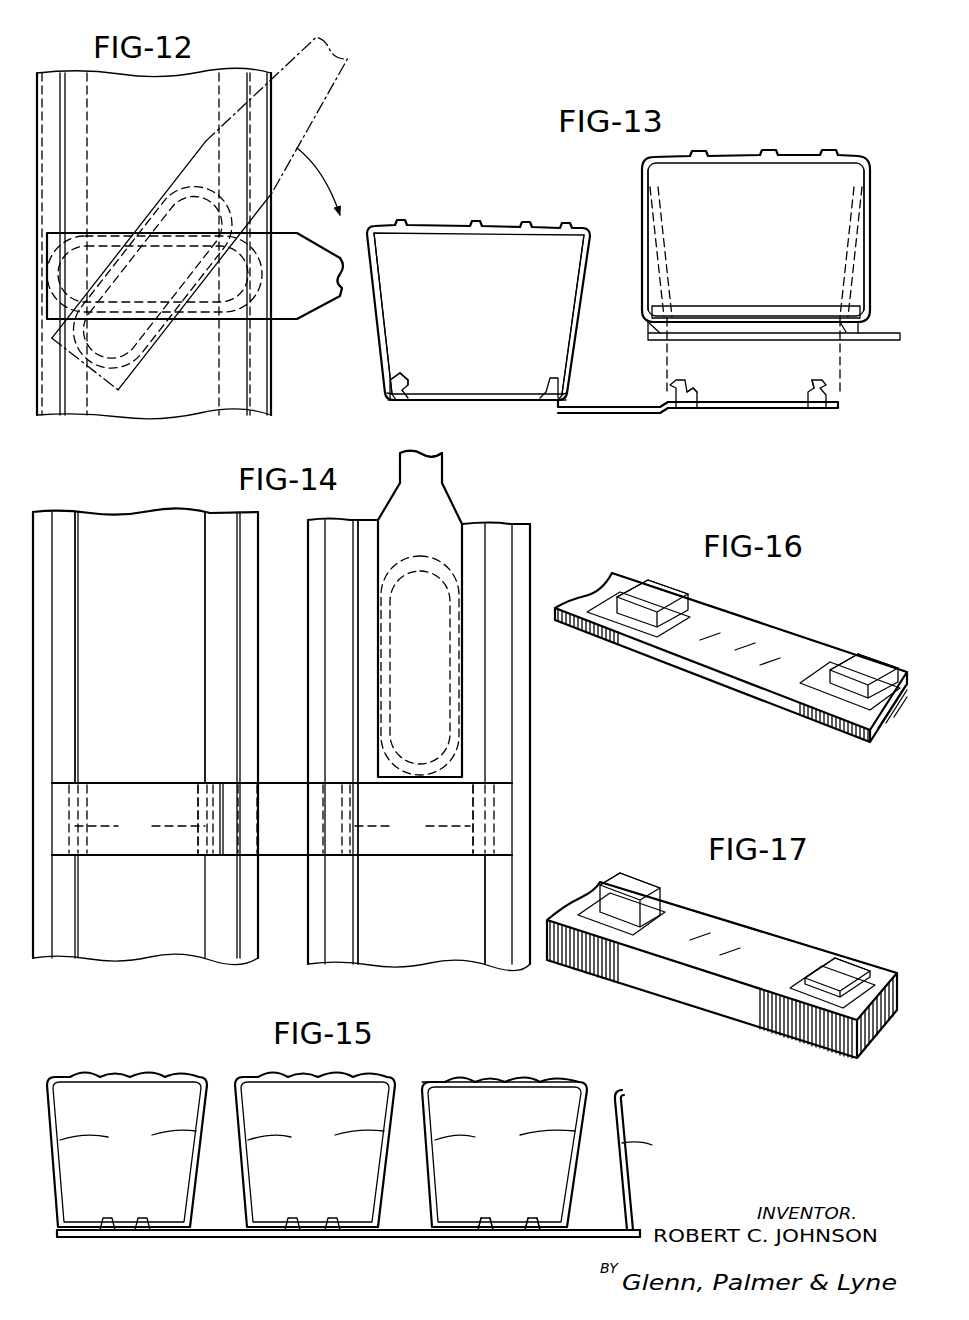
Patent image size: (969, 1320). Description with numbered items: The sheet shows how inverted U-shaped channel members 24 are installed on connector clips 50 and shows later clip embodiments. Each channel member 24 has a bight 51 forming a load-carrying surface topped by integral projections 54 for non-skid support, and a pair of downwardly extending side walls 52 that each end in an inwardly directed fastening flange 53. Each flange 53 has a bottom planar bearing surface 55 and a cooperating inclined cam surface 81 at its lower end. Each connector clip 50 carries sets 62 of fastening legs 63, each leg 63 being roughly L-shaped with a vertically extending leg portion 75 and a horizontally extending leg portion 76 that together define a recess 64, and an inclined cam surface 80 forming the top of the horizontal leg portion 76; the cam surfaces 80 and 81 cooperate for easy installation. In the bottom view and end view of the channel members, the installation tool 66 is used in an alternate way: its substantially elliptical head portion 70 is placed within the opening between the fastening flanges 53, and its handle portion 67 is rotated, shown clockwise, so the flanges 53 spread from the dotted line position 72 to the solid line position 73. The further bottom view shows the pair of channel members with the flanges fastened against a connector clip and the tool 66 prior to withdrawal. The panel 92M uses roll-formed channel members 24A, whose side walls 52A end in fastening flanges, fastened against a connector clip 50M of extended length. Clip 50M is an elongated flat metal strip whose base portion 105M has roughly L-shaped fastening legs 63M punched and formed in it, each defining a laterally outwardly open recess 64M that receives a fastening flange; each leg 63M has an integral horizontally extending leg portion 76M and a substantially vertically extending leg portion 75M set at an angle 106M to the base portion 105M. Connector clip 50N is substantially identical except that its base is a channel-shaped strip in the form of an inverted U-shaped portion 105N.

In FIG. 12, the channel member 24 is at (62, 72).
In FIG. 13, the channel member 24 is at (598, 262).
In FIG. 14, the channel member 24 is at (263, 720).
In FIG. 15, the channel member 24A is at (58, 1120).
In FIG. 13, the connector clip 50 is at (574, 432).
In FIG. 14, the connector clip 50 is at (390, 872).
In FIG. 16, the connector clip 50M is at (850, 608).
In FIG. 15, the connector clip 50M is at (366, 1246).
In FIG. 17, the connector clip 50N is at (798, 895).
In FIG. 13, the bight 51 is at (490, 203).
In FIG. 13, the side wall 52 is at (583, 284).
In FIG. 15, the side wall 52A is at (379, 1139).
In FIG. 12, the fastening flange 53 is at (46, 410).
In FIG. 13, the fastening flange 53 is at (862, 328).
In FIG. 14, the fastening flange 53 is at (225, 678).
In FIG. 13, the projection 54 is at (400, 224).
In FIG. 13, the bottom planar bearing surface 55 is at (566, 397).
In FIG. 13, the set of fastening legs 62 is at (724, 388).
In FIG. 14, the set of fastening legs 62 is at (277, 784).
In FIG. 13, the fastening leg 63 is at (403, 384).
In FIG. 16, the fastening leg 63M is at (650, 566).
In FIG. 17, the fastening leg 63M is at (652, 870).
In FIG. 15, the fastening leg 63M is at (110, 1216).
In FIG. 13, the recess 64 is at (828, 406).
In FIG. 14, the recess 64 is at (272, 827).
In FIG. 16, the recess 64M is at (630, 624).
In FIG. 17, the recess 64M is at (618, 924).
In FIG. 15, the recess 64M is at (148, 1230).
In FIG. 12, the installation tool 66 is at (306, 125).
In FIG. 13, the installation tool 66 is at (872, 345).
In FIG. 14, the installation tool 66 is at (388, 506).
In FIG. 12, the handle portion 67 is at (352, 58).
In FIG. 14, the handle portion 67 is at (440, 458).
In FIG. 12, the head portion 70 is at (140, 326).
In FIG. 13, the head portion 70 is at (718, 310).
In FIG. 12, the dotted line position 72 is at (88, 150).
In FIG. 13, the dotted line position 72 is at (676, 306).
In FIG. 12, the solid line position 73 is at (243, 86).
In FIG. 13, the solid line position 73 is at (660, 340).
In FIG. 13, the vertically extending leg portion 75 is at (420, 382).
In FIG. 14, the vertically extending leg portion 75 is at (470, 862).
In FIG. 16, the vertically extending leg portion 75M is at (812, 676).
In FIG. 17, the vertically extending leg portion 75M is at (790, 976).
In FIG. 15, the vertically extending leg portion 75M is at (500, 1234).
In FIG. 13, the horizontally extending leg portion 76 is at (410, 378).
In FIG. 16, the horizontally extending leg portion 76M is at (842, 668).
In FIG. 17, the horizontally extending leg portion 76M is at (845, 946).
In FIG. 15, the horizontally extending leg portion 76M is at (540, 1226).
In FIG. 13, the cam surface 80 is at (388, 376).
In FIG. 13, the cam surface 81 is at (545, 397).
In FIG. 14, the cam surface 81 is at (482, 930).
In FIG. 15, the panel 92M is at (438, 1068).
In FIG. 16, the base portion 105M is at (752, 692).
In FIG. 15, the base portion 105M is at (220, 1238).
In FIG. 17, the inverted U-shaped portion 105N is at (872, 1042).
In FIG. 16, the angle 106M is at (685, 627).